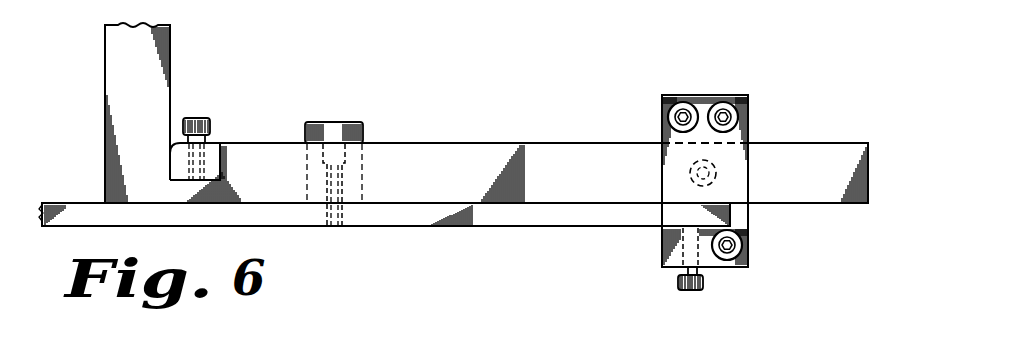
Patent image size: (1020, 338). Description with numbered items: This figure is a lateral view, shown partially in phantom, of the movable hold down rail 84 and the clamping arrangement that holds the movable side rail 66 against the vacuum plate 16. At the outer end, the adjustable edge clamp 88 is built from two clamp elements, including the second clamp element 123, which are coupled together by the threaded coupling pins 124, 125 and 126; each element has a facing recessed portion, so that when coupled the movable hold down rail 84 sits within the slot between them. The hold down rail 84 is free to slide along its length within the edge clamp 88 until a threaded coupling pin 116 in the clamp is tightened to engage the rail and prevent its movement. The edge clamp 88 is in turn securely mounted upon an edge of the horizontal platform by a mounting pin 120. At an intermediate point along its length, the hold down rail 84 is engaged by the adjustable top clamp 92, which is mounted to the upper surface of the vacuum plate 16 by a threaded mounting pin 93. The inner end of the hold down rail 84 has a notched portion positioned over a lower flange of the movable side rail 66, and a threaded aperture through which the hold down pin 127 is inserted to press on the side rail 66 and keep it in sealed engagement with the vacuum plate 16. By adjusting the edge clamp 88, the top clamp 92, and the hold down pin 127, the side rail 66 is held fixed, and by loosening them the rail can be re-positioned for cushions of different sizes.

The vacuum plate 16 is at (383, 215).
The movable side rail 66 is at (104, 80).
The movable hold down rail 84 is at (418, 165).
The adjustable edge clamp 88 is at (662, 250).
The adjustable top clamp 92 is at (350, 122).
The threaded mounting pin 93 is at (328, 182).
The threaded coupling pin 116 is at (718, 168).
The mounting pin 120 is at (682, 287).
The second clamp element 123 is at (732, 188).
The threaded coupling pin 124 is at (667, 107).
The threaded coupling pin 125 is at (717, 105).
The threaded coupling pin 126 is at (730, 260).
The hold down pin 127 is at (197, 117).